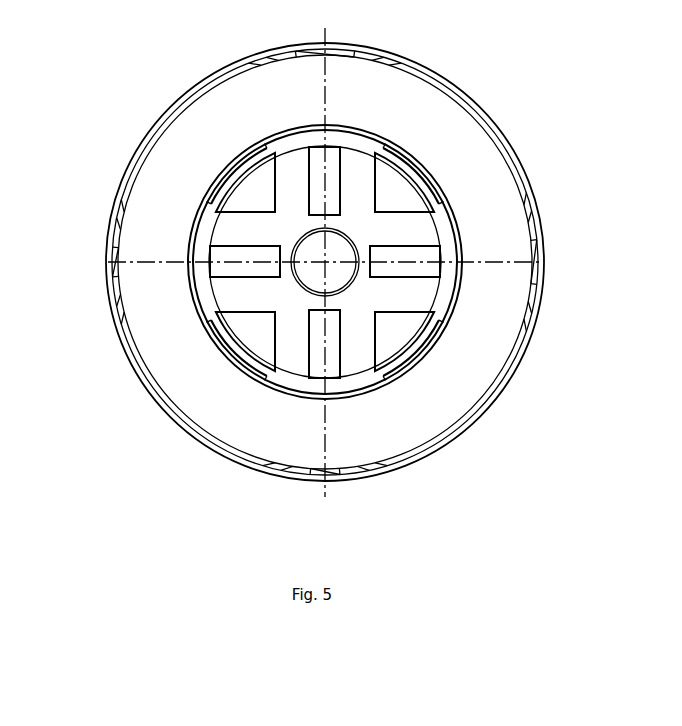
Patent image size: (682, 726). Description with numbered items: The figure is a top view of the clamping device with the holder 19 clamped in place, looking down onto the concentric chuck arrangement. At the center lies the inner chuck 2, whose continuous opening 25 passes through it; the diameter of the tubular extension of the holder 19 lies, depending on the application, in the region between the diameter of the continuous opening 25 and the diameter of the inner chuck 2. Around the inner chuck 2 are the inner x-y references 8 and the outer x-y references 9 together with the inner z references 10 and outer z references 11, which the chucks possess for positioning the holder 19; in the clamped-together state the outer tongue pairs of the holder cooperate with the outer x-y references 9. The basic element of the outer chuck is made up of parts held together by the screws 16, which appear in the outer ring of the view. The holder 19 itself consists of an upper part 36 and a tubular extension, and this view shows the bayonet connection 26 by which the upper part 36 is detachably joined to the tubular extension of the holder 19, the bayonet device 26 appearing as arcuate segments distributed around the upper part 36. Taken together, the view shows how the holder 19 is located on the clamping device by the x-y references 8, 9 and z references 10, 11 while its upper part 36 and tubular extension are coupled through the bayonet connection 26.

The inner chuck 2 is at (350, 318).
The inner x-y reference 8 is at (393, 251).
The outer x-y reference 9 is at (540, 265).
The inner z reference 10 is at (392, 327).
The outer z reference 11 is at (140, 377).
The screws 16 is at (300, 52).
The holder 19 is at (190, 150).
The continuous opening 25 is at (313, 248).
The bayonet connection 26 is at (230, 358).
The upper part 36 is at (177, 343).